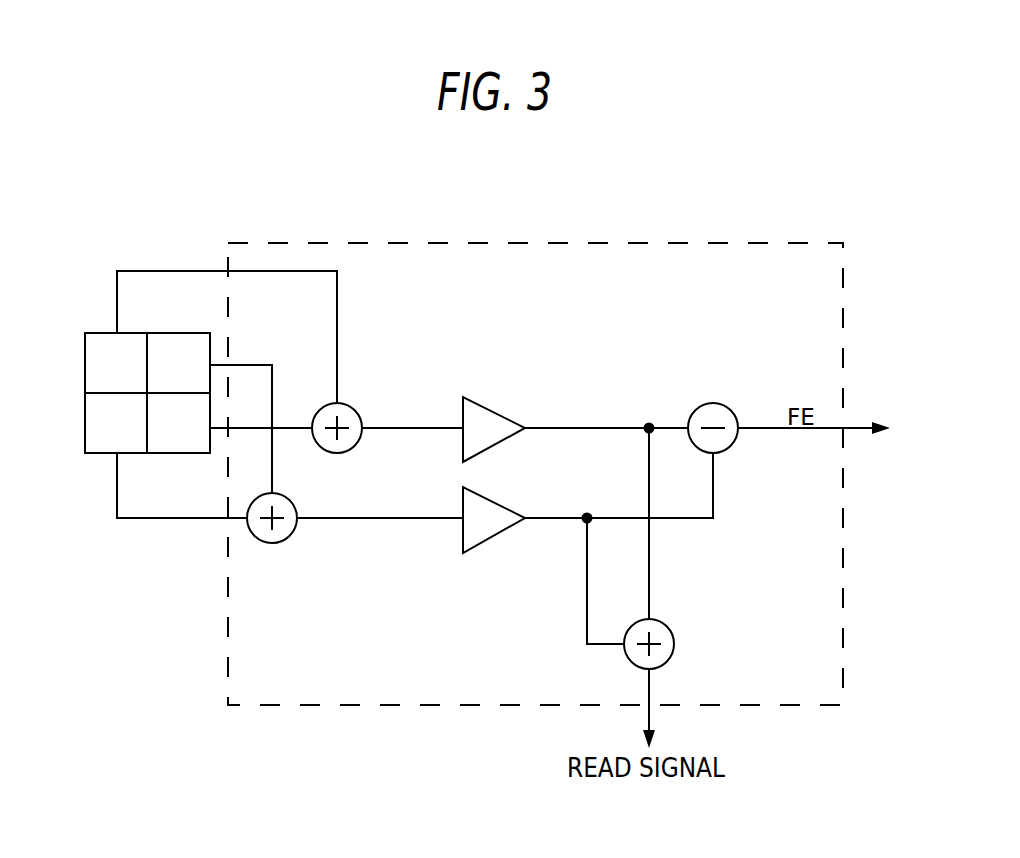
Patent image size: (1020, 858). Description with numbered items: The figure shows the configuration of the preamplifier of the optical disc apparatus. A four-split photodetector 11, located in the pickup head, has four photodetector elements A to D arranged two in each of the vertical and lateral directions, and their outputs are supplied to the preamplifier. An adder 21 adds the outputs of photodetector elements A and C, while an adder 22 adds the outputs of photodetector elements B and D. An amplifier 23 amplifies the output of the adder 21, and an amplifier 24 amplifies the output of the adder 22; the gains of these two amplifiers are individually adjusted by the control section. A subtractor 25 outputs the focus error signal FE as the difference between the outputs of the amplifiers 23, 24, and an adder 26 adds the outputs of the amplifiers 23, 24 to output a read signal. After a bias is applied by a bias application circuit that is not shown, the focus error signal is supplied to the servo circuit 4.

The servo circuit 4 is at (497, 250).
The four-split photodetector 11 is at (97, 332).
The adder 21 is at (345, 413).
The adder 22 is at (284, 504).
The amplifier 23 is at (484, 415).
The amplifier 24 is at (484, 508).
The subtractor 25 is at (714, 412).
The adder 26 is at (662, 633).